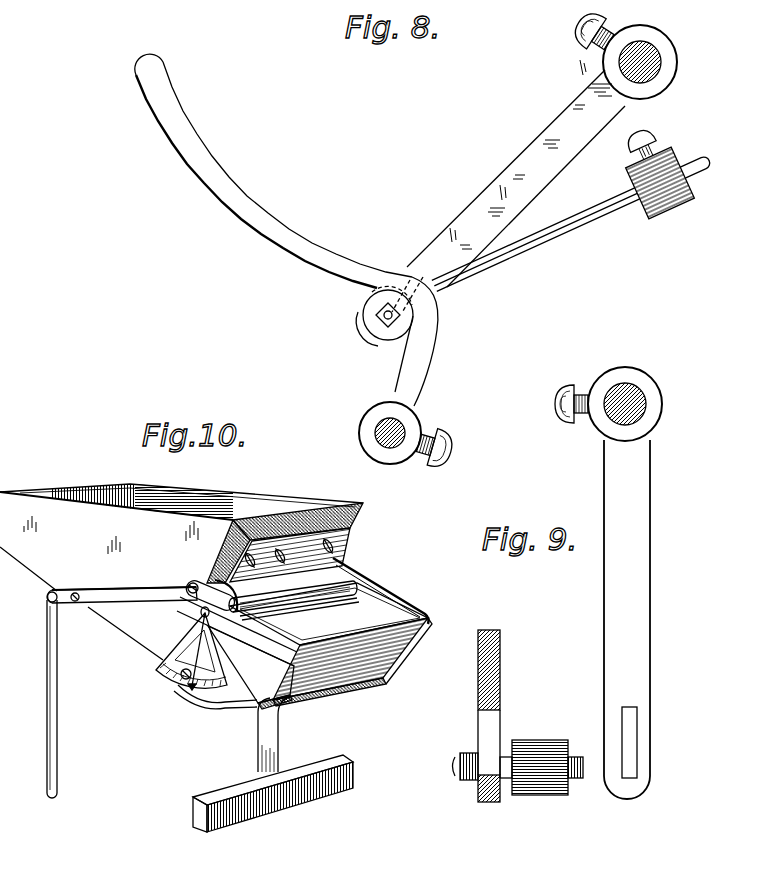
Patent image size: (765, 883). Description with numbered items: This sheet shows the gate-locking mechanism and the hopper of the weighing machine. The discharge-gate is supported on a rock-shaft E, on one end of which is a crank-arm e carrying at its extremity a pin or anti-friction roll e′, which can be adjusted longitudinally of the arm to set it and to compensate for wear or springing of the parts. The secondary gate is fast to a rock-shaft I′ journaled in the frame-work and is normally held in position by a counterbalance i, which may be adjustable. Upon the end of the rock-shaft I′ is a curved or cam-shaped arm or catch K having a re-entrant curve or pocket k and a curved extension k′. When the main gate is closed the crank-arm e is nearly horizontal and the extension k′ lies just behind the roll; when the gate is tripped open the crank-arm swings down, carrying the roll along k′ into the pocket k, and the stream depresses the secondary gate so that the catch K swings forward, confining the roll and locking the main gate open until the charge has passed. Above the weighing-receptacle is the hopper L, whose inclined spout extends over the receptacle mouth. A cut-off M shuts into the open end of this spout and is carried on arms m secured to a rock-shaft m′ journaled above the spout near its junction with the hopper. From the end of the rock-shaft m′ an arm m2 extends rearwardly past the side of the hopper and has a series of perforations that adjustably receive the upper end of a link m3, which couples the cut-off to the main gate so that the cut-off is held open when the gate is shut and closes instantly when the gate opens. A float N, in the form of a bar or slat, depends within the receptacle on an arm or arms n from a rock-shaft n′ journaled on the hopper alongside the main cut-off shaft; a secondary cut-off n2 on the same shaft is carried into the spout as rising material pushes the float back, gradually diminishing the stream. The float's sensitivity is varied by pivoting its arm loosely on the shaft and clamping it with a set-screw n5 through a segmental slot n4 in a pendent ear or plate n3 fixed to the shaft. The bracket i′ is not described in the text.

In FIG. 8, the curved extension of the catch k′ is at (273, 171).
In FIG. 8, the re-entrant curve or pocket k is at (401, 304).
In FIG. 8, the curved or cam-shaped arm or catch K is at (437, 337).
In FIG. 8, the crank-arm e is at (358, 304).
In FIG. 9, the crank-arm e is at (551, 621).
In FIG. 8, the rock-shaft E is at (678, 62).
In FIG. 9, the rock-shaft E is at (662, 404).
In FIG. 8, the counterbalance i is at (566, 211).
In FIG. 8, the rock-shaft I′ is at (402, 425).
In FIG. 9, the pin or anti-friction roll e′ is at (518, 758).
In FIG. 10, the hopper L is at (181, 572).
In FIG. 10, the rock-shaft n′ is at (330, 570).
In FIG. 10, the rock-shaft m′ is at (283, 597).
In FIG. 10, the secondary cut-off n2 is at (302, 618).
In FIG. 10, the arms m is at (303, 612).
In FIG. 10, the cut-off M is at (397, 657).
In FIG. 10, the bracket plate i′ is at (251, 667).
In FIG. 10, the arm m2 is at (128, 600).
In FIG. 10, the link m3 is at (67, 699).
In FIG. 10, the pendent ear or plate n3 is at (176, 648).
In FIG. 10, the segmental slot n4 is at (180, 672).
In FIG. 10, the set-screw n5 is at (191, 689).
In FIG. 10, the arm or arms n is at (232, 728).
In FIG. 10, the float N is at (292, 812).